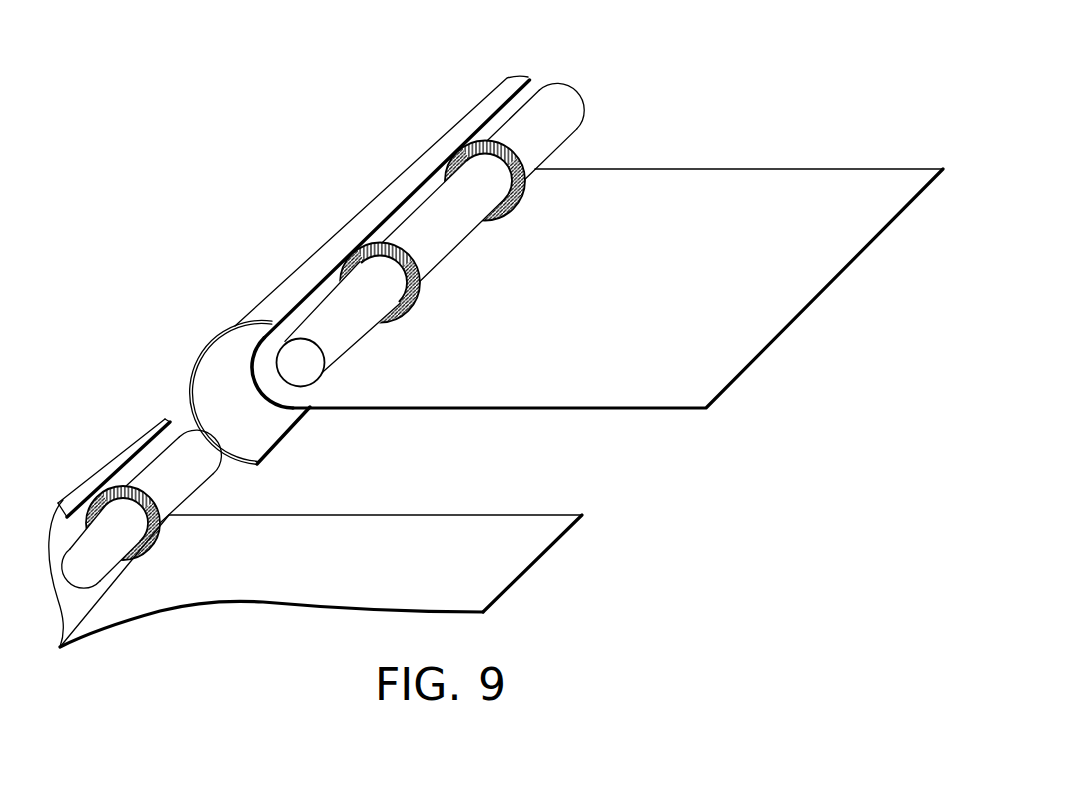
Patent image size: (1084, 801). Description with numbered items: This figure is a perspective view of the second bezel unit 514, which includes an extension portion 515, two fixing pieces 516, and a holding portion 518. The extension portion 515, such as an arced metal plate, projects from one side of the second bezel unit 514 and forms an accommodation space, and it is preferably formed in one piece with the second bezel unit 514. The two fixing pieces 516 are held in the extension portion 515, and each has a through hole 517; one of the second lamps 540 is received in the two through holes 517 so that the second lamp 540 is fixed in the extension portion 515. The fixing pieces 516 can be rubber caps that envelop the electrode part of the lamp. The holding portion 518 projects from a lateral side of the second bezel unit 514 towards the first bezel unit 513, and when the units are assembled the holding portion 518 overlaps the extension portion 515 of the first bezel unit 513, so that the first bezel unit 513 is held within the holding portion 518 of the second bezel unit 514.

The first bezel unit 513 is at (535, 527).
The second bezel unit 514 is at (850, 188).
The extension portion 515 is at (490, 100).
The fixing pieces 516 is at (470, 131).
The through hole 517 is at (440, 163).
The holding portion 518 is at (246, 315).
The second lamp 540 is at (560, 107).